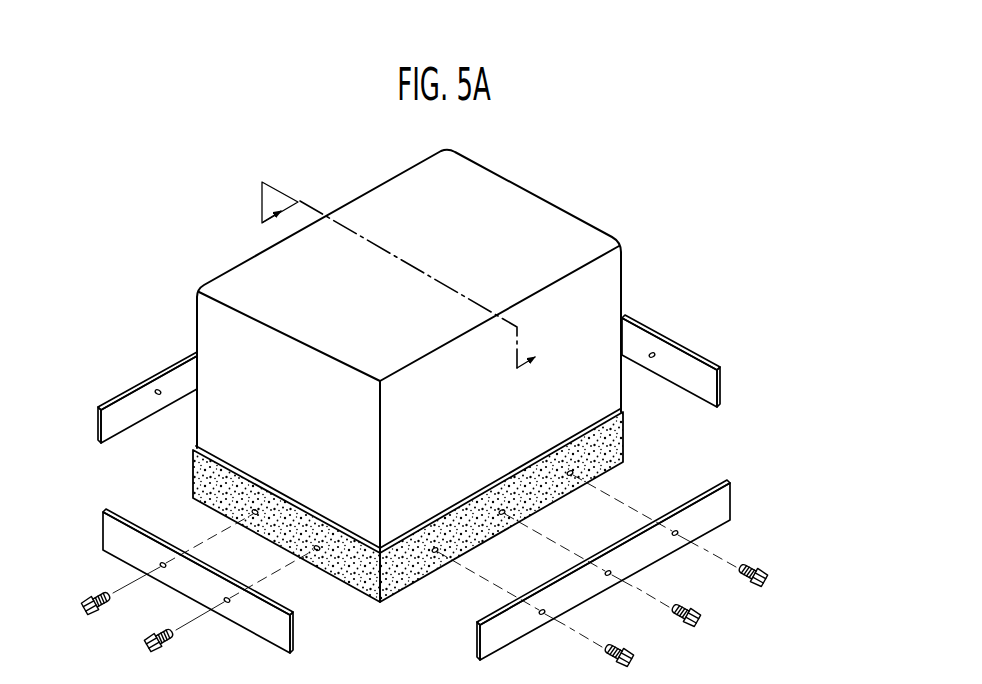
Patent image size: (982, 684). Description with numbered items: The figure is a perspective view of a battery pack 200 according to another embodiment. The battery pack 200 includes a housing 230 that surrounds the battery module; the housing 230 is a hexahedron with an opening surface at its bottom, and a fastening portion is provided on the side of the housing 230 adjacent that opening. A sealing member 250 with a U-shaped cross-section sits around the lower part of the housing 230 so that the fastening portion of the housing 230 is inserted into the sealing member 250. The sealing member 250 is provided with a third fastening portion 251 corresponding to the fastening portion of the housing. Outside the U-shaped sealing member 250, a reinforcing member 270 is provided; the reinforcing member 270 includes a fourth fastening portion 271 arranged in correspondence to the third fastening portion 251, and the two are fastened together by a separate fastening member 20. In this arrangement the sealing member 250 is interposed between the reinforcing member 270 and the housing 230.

The battery pack 200 is at (684, 230).
The housing 230 is at (530, 197).
The sealing member 250 is at (193, 467).
The third fastening portion 251 is at (316, 549).
The reinforcing member 270 is at (98, 425).
The fourth fastening portion 271 is at (225, 601).
The fastening member 20 is at (150, 643).